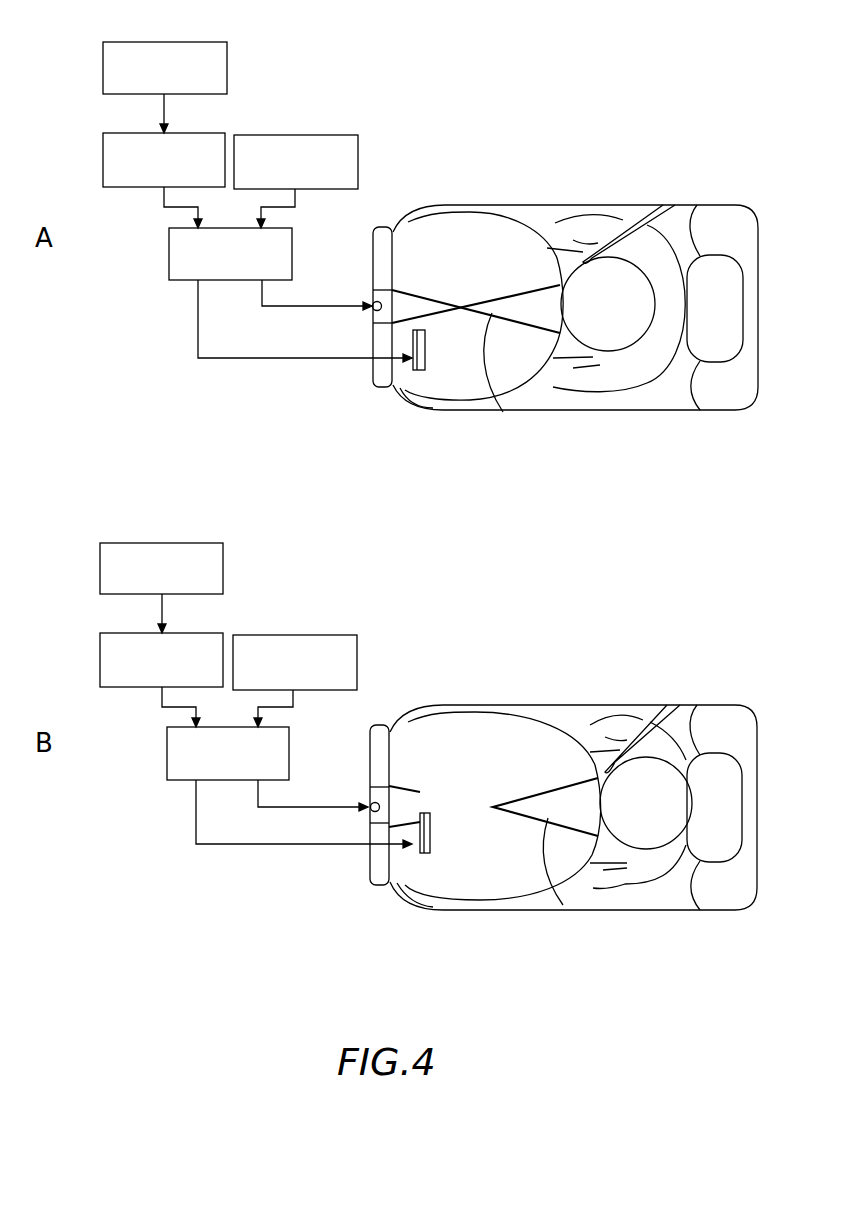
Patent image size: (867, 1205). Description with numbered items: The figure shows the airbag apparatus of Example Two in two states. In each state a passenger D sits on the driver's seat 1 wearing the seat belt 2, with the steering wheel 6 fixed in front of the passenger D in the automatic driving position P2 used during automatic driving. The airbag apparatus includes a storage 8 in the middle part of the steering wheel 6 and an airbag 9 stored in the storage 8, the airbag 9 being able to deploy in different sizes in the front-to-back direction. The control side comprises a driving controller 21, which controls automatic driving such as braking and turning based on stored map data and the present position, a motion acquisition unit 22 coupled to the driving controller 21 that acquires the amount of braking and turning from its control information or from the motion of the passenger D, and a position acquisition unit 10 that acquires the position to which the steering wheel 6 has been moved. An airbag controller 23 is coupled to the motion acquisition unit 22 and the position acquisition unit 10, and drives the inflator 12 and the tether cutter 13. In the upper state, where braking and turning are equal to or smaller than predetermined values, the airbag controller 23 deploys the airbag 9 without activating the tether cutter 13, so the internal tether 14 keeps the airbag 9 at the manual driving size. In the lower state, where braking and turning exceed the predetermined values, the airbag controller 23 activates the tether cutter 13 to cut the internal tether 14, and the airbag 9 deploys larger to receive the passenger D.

The driver's seat 1 is at (759, 240).
The seat belt 2 is at (660, 205).
The steering wheel 6 is at (367, 233).
The storage 8 is at (372, 285).
The airbag 9 is at (477, 212).
The position acquisition unit 10 is at (273, 135).
The inflator 12 is at (372, 292).
The tether cutter 13 is at (423, 362).
The internal tether 14 is at (503, 412).
The driving controller 21 is at (137, 42).
The motion acquisition unit 22 is at (137, 133).
The airbag controller 23 is at (169, 250).
The passenger D is at (612, 352).
The automatic driving position P2 is at (383, 387).